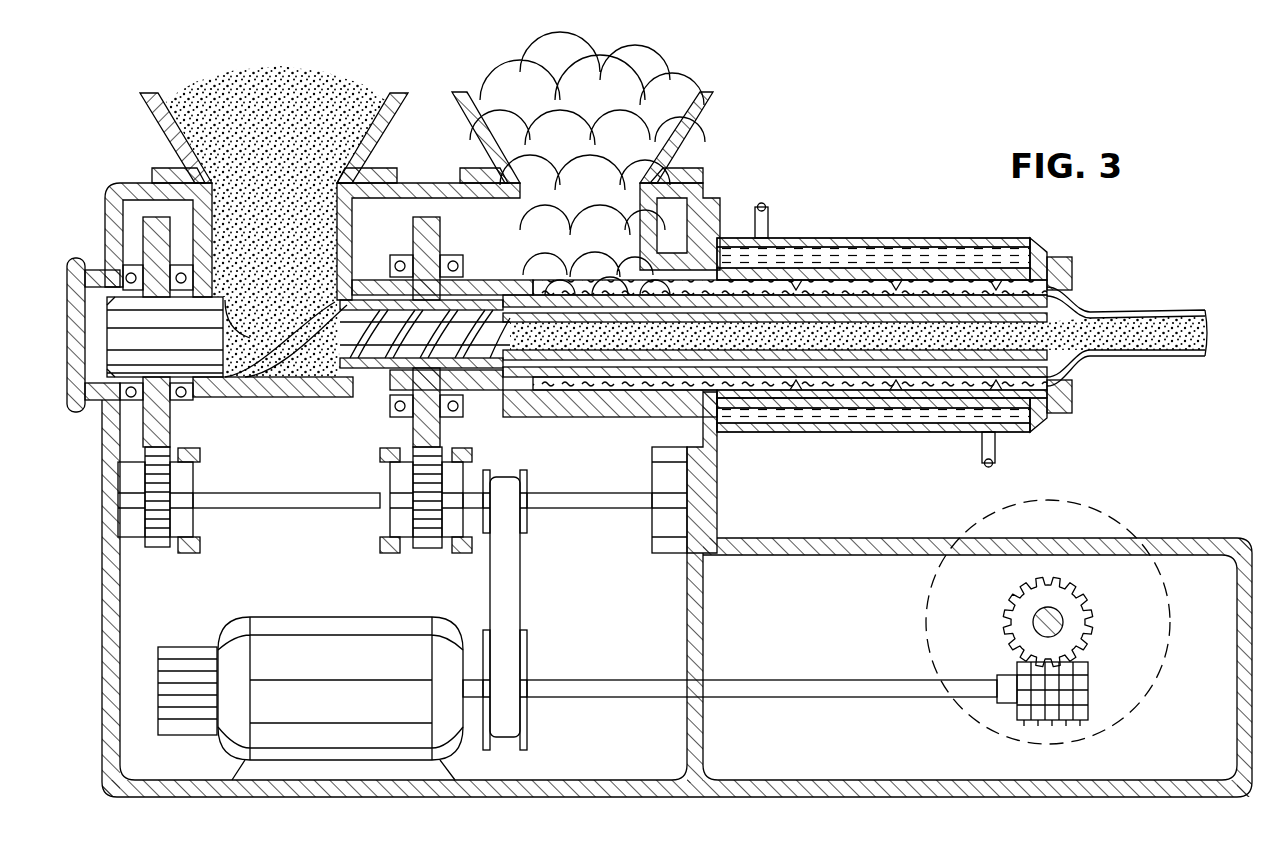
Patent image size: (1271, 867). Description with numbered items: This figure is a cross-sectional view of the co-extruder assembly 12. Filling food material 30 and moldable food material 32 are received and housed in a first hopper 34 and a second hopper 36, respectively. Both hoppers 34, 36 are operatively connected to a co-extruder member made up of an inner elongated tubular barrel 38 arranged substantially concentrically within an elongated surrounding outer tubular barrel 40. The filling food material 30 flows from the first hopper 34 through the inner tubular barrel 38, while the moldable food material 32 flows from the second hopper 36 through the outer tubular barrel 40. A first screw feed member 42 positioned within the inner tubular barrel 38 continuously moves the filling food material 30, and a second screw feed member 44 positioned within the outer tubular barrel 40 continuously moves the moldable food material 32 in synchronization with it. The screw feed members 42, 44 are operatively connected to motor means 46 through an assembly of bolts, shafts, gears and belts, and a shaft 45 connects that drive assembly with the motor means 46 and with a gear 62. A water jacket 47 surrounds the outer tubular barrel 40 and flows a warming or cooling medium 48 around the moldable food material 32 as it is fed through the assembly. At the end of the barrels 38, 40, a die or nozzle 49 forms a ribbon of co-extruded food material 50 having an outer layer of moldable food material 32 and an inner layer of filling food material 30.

The co-extruder assembly 12 is at (742, 58).
The filling food material 30 is at (355, 88).
The moldable food material 32 is at (700, 80).
The first hopper 34 is at (157, 126).
The second hopper 36 is at (700, 125).
The inner elongated tubular barrel 38 is at (793, 360).
The outer tubular barrel 40 is at (843, 270).
The first screw feed member 42 is at (238, 362).
The second screw feed member 44 is at (383, 382).
The shaft 45 is at (866, 656).
The motor means 46 is at (352, 671).
The water jacket 47 is at (975, 238).
The warming or cooling medium 48 is at (908, 258).
The die or nozzle 49 is at (1060, 262).
The ribbon of co-extruded food material 50 is at (1135, 300).
The gear 62 is at (1105, 510).